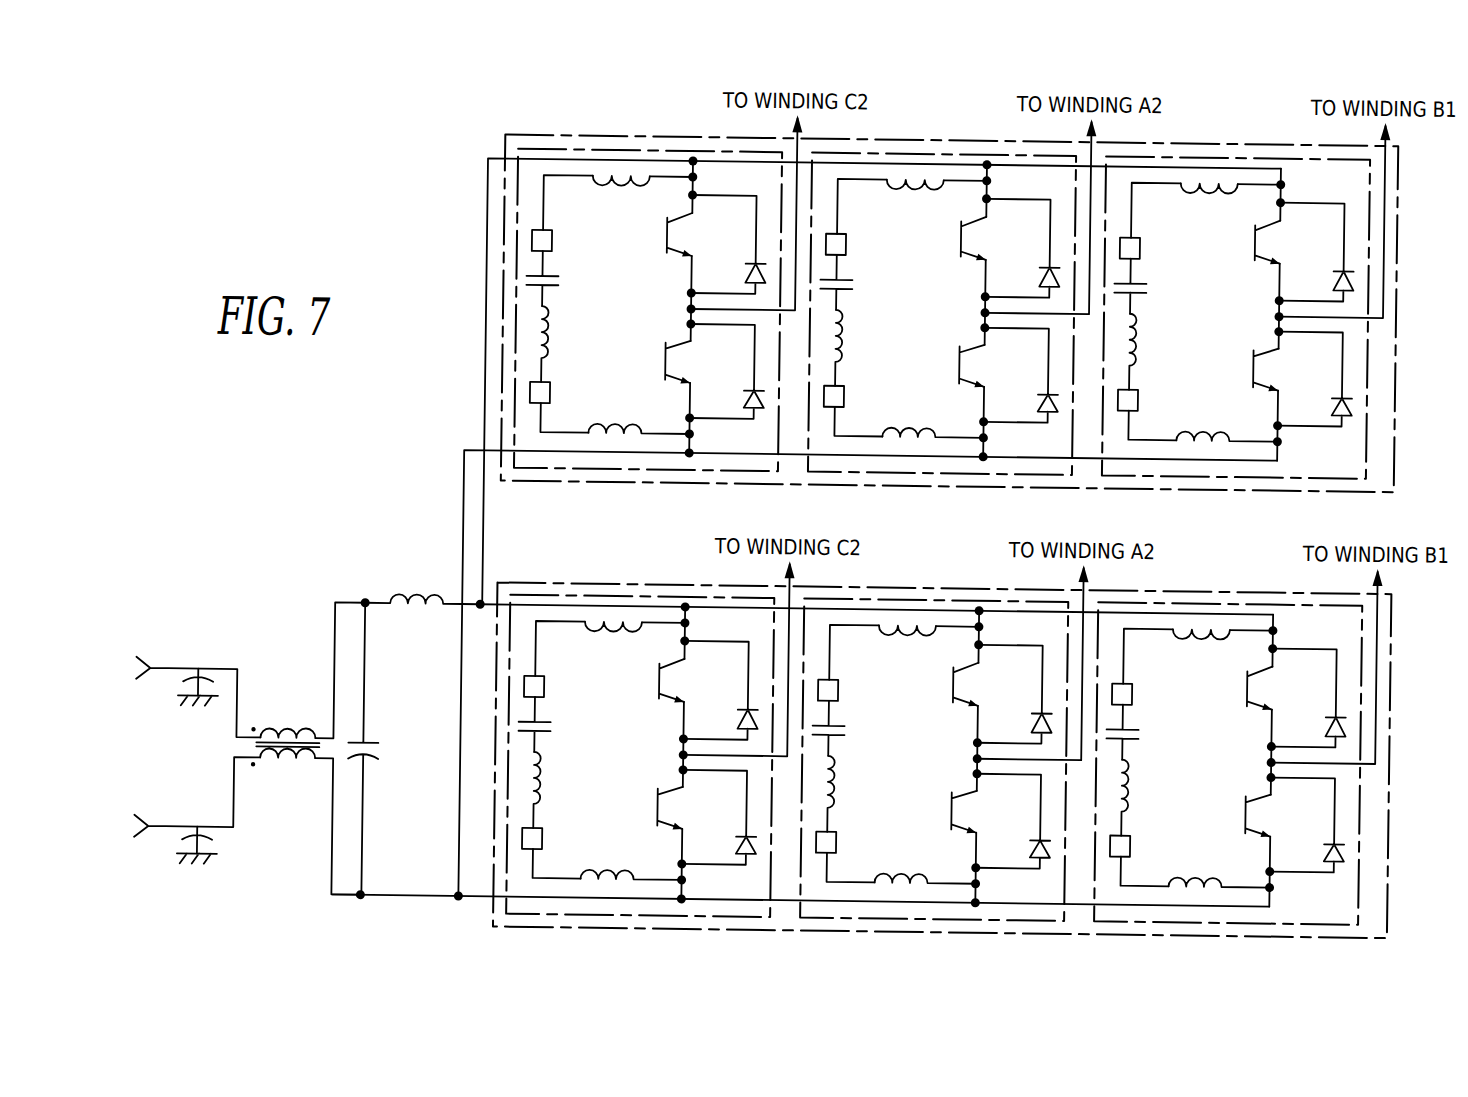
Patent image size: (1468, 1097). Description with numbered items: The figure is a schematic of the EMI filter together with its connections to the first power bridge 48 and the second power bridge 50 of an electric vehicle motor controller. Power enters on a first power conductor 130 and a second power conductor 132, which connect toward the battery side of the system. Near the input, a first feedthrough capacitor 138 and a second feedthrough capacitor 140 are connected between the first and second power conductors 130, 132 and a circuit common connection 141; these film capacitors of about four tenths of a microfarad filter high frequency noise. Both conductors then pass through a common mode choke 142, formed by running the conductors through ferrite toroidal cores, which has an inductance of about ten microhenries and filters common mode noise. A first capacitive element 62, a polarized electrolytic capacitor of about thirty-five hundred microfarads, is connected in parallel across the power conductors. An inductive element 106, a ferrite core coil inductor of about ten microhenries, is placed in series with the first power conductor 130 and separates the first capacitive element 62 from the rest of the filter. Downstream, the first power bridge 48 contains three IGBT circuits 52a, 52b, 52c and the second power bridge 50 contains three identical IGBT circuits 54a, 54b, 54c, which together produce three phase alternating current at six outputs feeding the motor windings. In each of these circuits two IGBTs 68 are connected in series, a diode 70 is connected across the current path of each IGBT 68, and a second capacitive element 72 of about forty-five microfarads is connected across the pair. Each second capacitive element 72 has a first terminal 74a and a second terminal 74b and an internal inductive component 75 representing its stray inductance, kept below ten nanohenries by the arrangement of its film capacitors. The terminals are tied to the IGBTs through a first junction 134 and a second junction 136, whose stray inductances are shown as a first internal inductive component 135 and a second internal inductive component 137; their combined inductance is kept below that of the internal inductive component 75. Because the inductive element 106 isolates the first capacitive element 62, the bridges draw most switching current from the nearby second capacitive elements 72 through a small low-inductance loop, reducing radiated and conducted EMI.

The first power bridge 48 is at (549, 584).
The second power bridge 50 is at (551, 136).
The IGBT circuit 52a is at (934, 736).
The IGBT circuit 52b is at (1228, 740).
The IGBT circuit 52c is at (640, 733).
The IGBT circuit 54a is at (942, 291).
The IGBT circuit 54b is at (1236, 294).
The IGBT circuit 54c is at (648, 287).
The first capacitive element 62 is at (381, 749).
The IGBT 68 is at (993, 525).
The diode 70 is at (1018, 534).
The second capacitive element 72 is at (854, 506).
The first terminal 74a is at (861, 464).
The second terminal 74b is at (856, 605).
The internal inductive component 75 is at (861, 569).
The inductive element 106 is at (434, 598).
The first power conductor 130 is at (165, 673).
The second power conductor 132 is at (165, 831).
The first junction 134 is at (907, 430).
The first internal inductive component 135 is at (913, 424).
The second junction 136 is at (861, 637).
The second internal inductive component 137 is at (929, 638).
The first feedthrough capacitor 138 is at (183, 689).
The second feedthrough capacitor 140 is at (224, 846).
The circuit common connection 141 is at (192, 866).
The common mode choke 142 is at (273, 741).